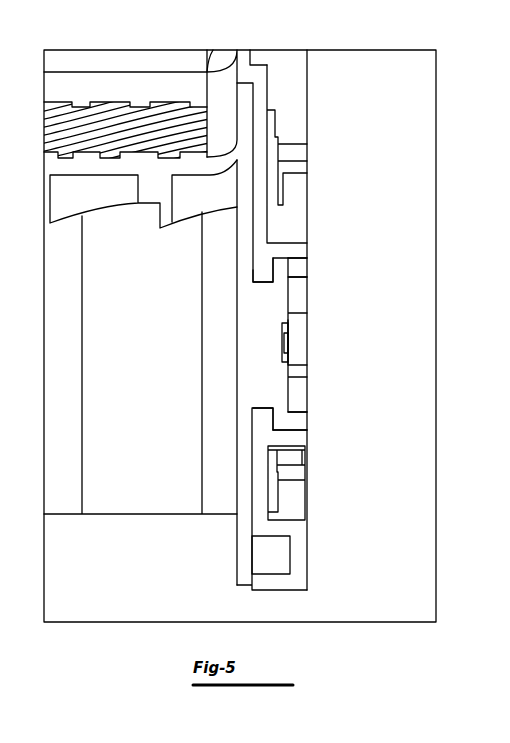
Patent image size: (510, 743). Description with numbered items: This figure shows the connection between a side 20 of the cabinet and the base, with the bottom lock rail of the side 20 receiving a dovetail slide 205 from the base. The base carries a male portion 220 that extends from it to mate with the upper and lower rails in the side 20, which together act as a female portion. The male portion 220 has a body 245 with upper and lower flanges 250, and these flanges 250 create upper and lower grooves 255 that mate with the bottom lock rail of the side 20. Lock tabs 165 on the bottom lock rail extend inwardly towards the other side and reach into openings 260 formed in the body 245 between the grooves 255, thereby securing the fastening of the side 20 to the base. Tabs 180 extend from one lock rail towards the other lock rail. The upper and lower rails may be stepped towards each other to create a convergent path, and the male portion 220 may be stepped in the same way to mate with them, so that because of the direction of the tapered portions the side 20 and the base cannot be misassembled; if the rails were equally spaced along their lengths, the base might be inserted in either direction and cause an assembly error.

The side 20 is at (248, 56).
The male portion 220 is at (344, 140).
The dovetail slide 205 is at (100, 310).
The tabs 180 is at (258, 277).
The body 245 is at (247, 331).
The grooves 255 is at (262, 283).
The flanges 250 is at (284, 269).
The lock tabs 165 is at (292, 341).
The openings 260 is at (283, 362).